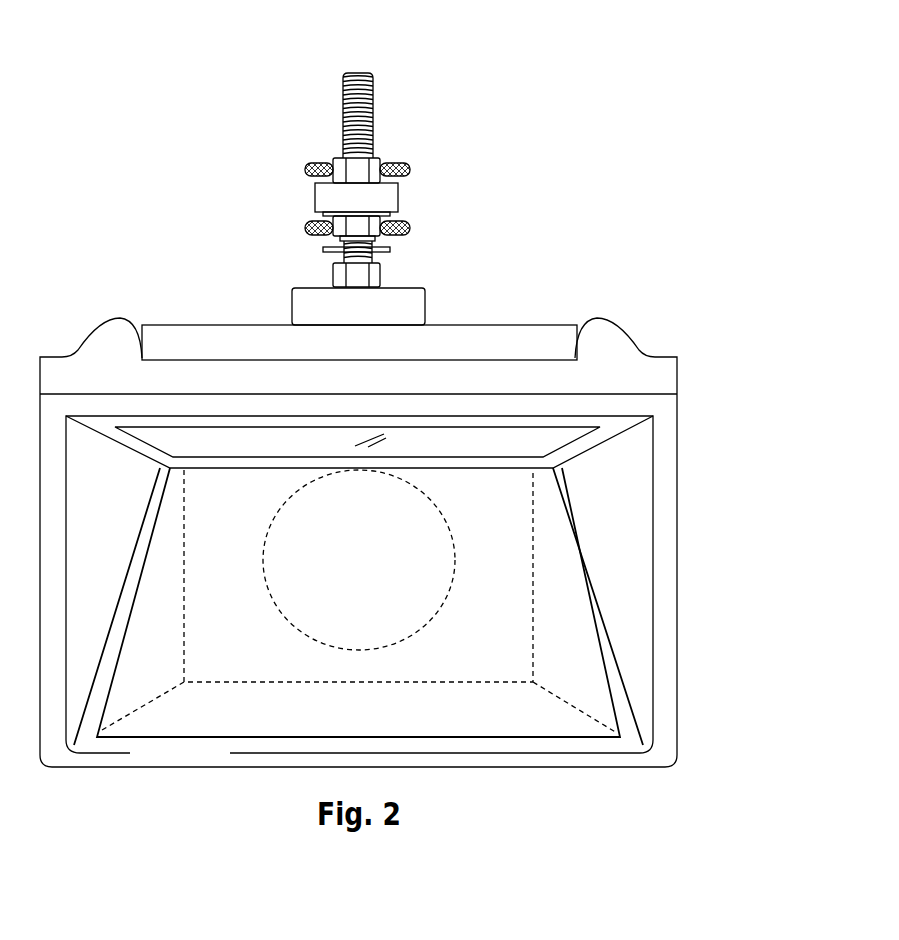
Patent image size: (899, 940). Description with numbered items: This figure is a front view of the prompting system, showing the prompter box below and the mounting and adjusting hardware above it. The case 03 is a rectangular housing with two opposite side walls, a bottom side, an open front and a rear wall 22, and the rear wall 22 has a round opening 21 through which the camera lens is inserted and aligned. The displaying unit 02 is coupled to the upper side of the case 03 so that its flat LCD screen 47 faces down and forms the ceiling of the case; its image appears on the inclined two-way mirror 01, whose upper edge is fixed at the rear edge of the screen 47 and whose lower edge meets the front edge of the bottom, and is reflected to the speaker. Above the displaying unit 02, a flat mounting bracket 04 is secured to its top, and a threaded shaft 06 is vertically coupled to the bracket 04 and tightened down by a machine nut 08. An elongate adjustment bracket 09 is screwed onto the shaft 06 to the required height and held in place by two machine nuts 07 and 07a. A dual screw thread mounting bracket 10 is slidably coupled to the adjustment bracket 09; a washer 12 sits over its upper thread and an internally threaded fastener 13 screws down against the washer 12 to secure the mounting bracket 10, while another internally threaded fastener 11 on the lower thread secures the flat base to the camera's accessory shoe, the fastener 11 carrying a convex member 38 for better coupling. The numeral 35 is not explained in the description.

The inclined two-way mirror 01 is at (150, 737).
The displaying unit 02 is at (527, 335).
The case 03 is at (680, 505).
The flat mounting bracket 04 is at (408, 308).
The threaded shaft 06 is at (362, 76).
The machine nut 07 is at (376, 163).
The machine nut 07a is at (303, 228).
The machine nut 08 is at (373, 275).
The elongate adjustment bracket 09 is at (387, 196).
The dual screw thread mounting bracket 10 is at (323, 248).
The internally threaded fastener 11 is at (412, 228).
The washer 12 is at (325, 217).
The internally threaded fastener 13 is at (412, 167).
The round opening 21 is at (432, 568).
The rear wall 22 is at (205, 607).
The upper left washer 35 is at (327, 177).
The convex member 38 is at (383, 217).
The flat LCD screen 47 is at (555, 445).